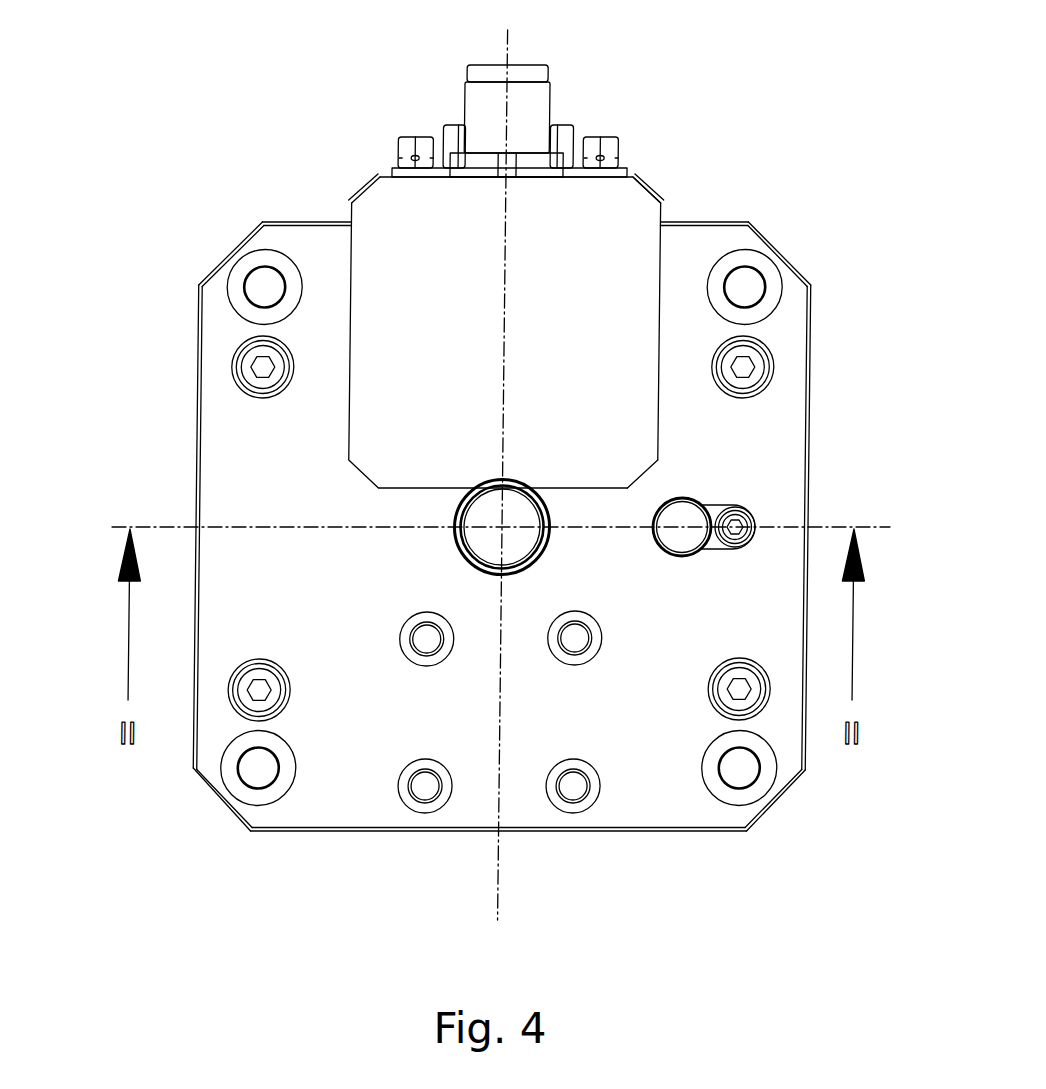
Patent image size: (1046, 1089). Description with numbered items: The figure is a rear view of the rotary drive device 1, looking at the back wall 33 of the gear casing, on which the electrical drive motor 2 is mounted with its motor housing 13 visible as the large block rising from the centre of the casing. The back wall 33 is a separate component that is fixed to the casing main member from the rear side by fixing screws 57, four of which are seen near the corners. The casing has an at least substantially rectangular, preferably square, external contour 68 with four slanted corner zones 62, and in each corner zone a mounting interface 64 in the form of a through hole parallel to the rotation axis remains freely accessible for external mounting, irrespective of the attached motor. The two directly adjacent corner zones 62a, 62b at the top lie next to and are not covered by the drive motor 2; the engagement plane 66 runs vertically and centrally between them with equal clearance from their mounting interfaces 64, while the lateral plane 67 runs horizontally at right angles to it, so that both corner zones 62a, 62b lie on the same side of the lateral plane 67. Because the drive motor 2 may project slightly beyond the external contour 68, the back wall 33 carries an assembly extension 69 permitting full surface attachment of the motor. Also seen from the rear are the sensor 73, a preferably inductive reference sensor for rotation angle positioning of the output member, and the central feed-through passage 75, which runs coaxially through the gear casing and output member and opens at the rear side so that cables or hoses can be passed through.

The rotary drive device 1 is at (786, 120).
The electrical drive motor 2 is at (622, 205).
The motor housing 13 is at (649, 436).
The back wall 33 is at (641, 808).
The fixing screws 57 is at (256, 362).
The corner zones 62 is at (258, 810).
The corner zone 62a is at (740, 237).
The corner zone 62b is at (249, 245).
The mounting interface 64 is at (247, 283).
The engagement plane 66 is at (510, 44).
The lateral plane 67 is at (247, 530).
The external contour 68 is at (814, 457).
The assembly extension 69 is at (363, 190).
The sensor 73 is at (687, 508).
The feed-through passage 75 is at (523, 542).